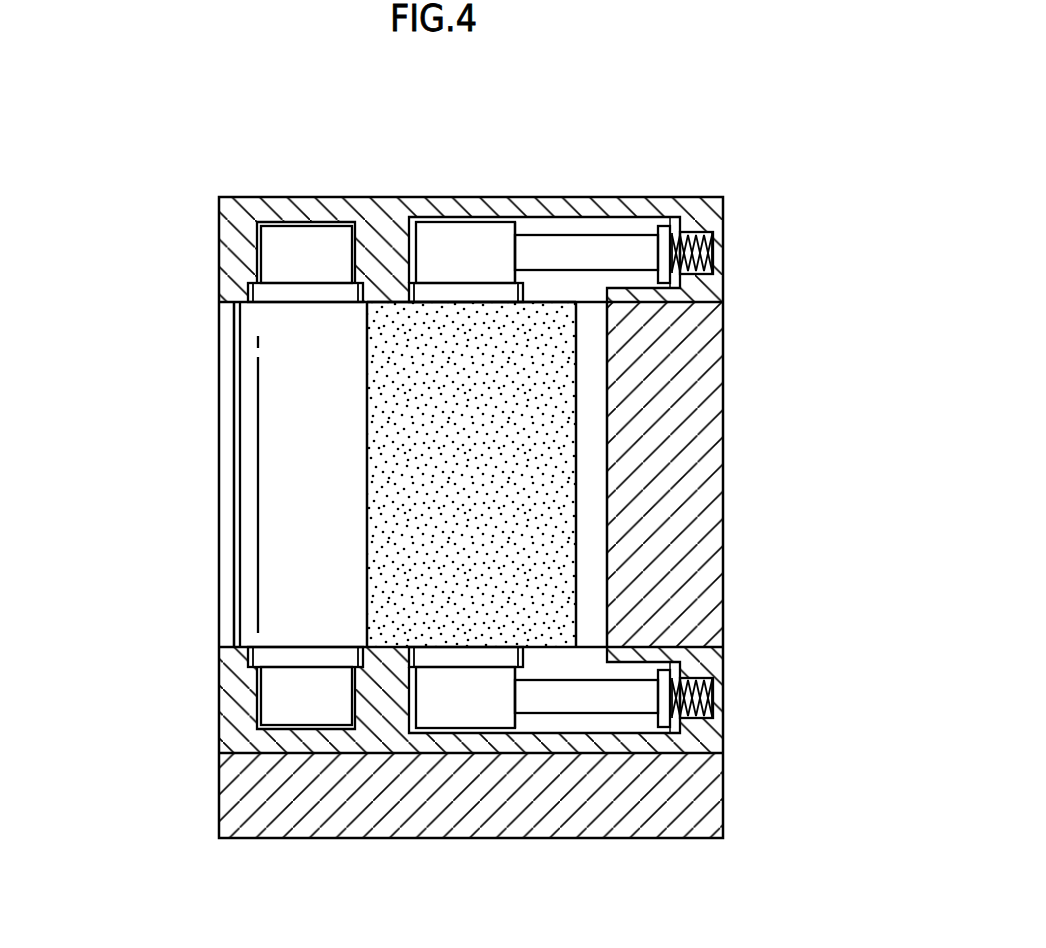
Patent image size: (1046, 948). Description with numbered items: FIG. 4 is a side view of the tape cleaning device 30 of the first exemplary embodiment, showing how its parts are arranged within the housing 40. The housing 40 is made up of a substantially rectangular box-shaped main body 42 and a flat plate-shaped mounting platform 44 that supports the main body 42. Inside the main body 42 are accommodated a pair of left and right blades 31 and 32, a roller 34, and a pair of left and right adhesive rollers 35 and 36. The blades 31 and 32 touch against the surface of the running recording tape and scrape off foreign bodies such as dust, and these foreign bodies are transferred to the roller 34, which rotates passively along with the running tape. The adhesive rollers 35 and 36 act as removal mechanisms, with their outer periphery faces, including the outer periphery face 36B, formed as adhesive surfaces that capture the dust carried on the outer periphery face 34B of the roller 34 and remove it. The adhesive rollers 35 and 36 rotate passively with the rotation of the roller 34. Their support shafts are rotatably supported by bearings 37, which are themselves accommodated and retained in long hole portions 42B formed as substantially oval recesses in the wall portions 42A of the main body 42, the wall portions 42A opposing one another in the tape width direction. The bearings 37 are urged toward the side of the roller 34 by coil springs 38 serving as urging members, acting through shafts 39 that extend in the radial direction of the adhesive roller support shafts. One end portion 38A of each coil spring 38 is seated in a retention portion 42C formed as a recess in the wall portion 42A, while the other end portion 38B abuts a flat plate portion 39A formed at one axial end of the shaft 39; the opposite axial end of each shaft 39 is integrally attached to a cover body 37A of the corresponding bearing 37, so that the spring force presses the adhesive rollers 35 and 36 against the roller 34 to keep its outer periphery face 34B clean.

The tape cleaning device 30 is at (503, 118).
The blade 31 is at (218, 445).
The blade 32 is at (163, 474).
The roller 34 is at (156, 474).
The outer periphery face 34B is at (172, 484).
The adhesive roller 35 is at (314, 474).
The adhesive roller 36 is at (314, 474).
The outer periphery face 36B is at (314, 319).
The bearing 37 is at (450, 243).
The cover body 37A is at (517, 230).
The coil spring 38 is at (742, 443).
The one end portion 38A is at (713, 260).
The other end portion 38B is at (672, 220).
The shaft 39 is at (623, 250).
The flat plate portion 39A is at (670, 287).
The housing 40 is at (725, 195).
The main body 42 is at (725, 455).
The wall portion 42A is at (233, 208).
The long hole portion 42B is at (600, 218).
The retention portion 42C is at (713, 238).
The mounting platform 44 is at (725, 787).